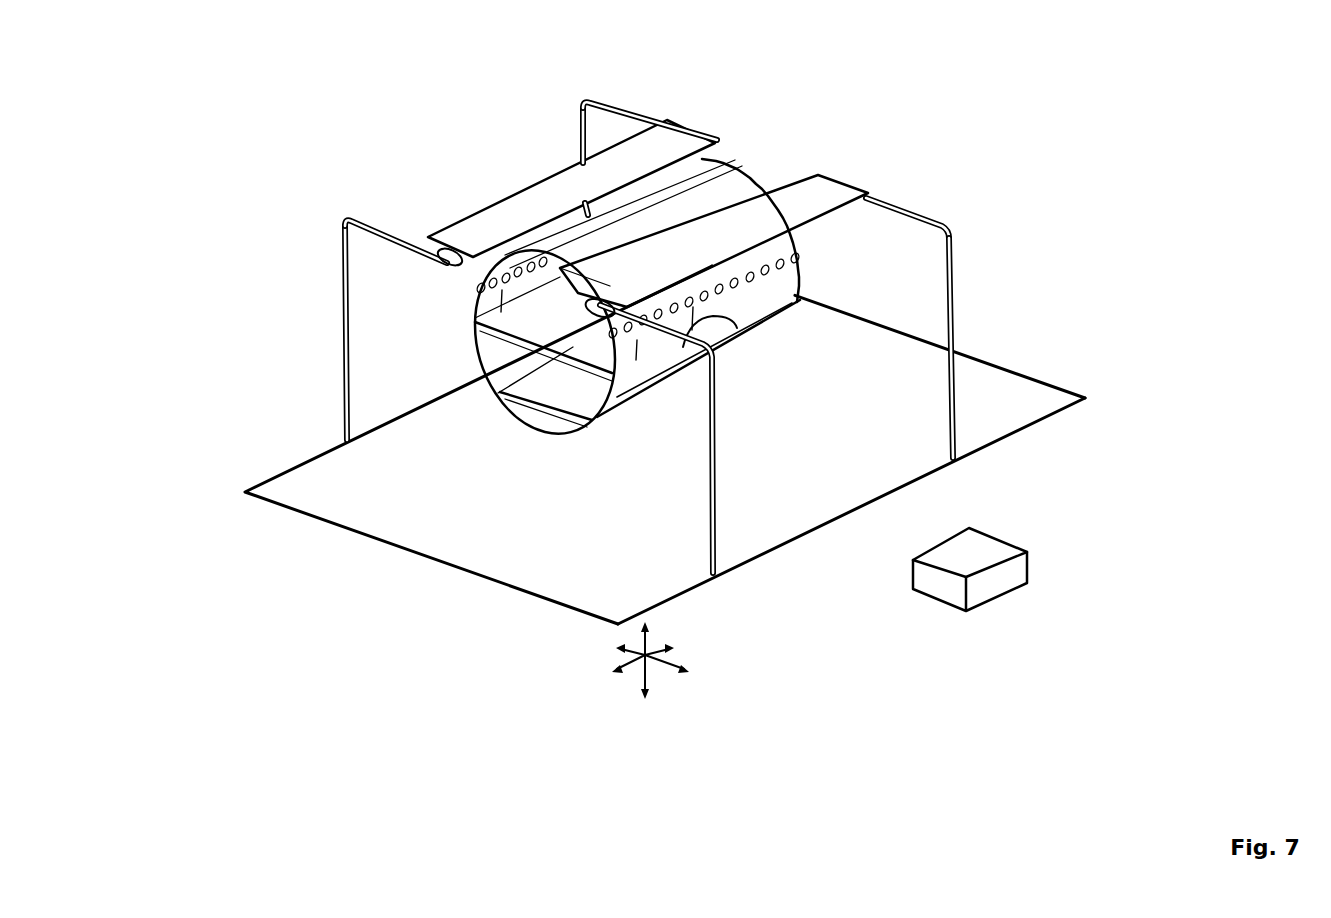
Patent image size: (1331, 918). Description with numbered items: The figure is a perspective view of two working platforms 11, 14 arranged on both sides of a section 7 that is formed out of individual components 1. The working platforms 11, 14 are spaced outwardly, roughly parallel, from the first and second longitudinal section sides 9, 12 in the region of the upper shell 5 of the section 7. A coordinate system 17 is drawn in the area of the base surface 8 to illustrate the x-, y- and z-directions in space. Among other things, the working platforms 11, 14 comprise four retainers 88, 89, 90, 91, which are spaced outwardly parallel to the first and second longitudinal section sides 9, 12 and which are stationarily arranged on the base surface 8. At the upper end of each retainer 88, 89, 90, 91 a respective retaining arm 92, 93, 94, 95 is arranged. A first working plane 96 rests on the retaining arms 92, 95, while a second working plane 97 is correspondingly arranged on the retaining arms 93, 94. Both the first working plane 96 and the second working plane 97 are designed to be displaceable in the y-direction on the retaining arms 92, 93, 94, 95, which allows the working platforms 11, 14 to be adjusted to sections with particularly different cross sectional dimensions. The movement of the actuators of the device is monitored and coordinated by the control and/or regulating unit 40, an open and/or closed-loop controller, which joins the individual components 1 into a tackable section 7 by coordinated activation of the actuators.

The individual components 1 is at (556, 372).
The section 7 is at (556, 372).
The upper shell 5 is at (770, 196).
The base surface 8 is at (702, 445).
The first longitudinal section side 9 is at (458, 355).
The working platform 11 is at (494, 221).
The second longitudinal section side 12 is at (987, 482).
The working platform 14 is at (830, 383).
The coordinate system 17 is at (647, 662).
The control and/or regulating unit 40 is at (980, 550).
The retainer 88 is at (340, 308).
The retainer 89 is at (717, 477).
The retainer 90 is at (956, 336).
The retainer 91 is at (583, 138).
The retaining arm 92 is at (373, 220).
The retaining arm 93 is at (723, 313).
The retaining arm 94 is at (915, 212).
The retaining arm 95 is at (617, 110).
The first working plane 96 is at (507, 213).
The second working plane 97 is at (818, 192).